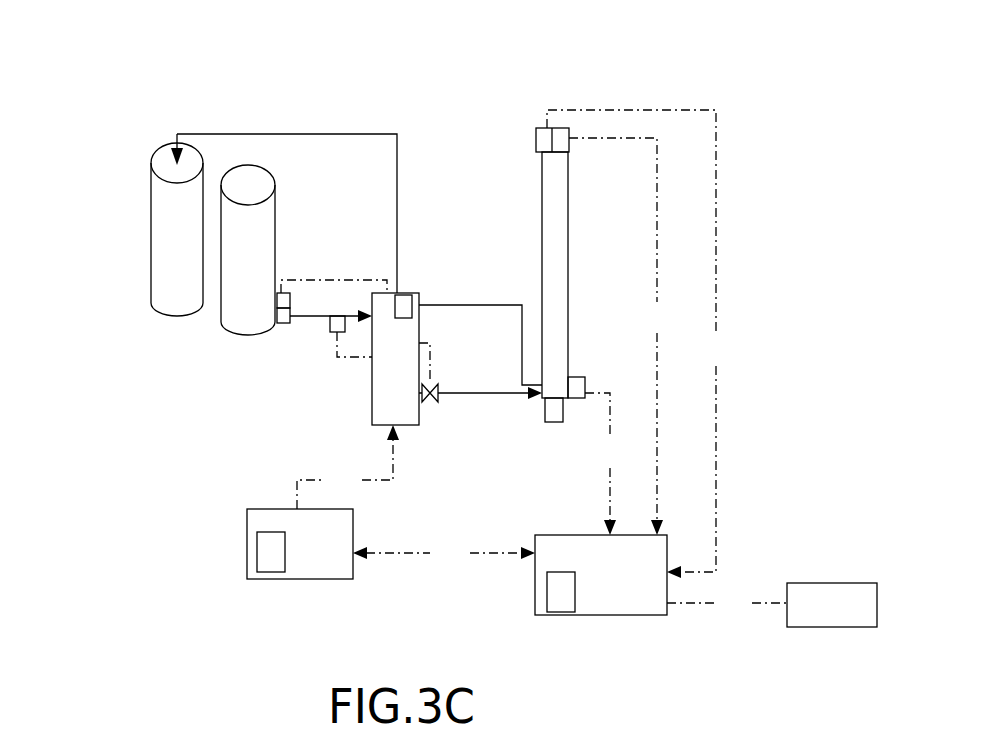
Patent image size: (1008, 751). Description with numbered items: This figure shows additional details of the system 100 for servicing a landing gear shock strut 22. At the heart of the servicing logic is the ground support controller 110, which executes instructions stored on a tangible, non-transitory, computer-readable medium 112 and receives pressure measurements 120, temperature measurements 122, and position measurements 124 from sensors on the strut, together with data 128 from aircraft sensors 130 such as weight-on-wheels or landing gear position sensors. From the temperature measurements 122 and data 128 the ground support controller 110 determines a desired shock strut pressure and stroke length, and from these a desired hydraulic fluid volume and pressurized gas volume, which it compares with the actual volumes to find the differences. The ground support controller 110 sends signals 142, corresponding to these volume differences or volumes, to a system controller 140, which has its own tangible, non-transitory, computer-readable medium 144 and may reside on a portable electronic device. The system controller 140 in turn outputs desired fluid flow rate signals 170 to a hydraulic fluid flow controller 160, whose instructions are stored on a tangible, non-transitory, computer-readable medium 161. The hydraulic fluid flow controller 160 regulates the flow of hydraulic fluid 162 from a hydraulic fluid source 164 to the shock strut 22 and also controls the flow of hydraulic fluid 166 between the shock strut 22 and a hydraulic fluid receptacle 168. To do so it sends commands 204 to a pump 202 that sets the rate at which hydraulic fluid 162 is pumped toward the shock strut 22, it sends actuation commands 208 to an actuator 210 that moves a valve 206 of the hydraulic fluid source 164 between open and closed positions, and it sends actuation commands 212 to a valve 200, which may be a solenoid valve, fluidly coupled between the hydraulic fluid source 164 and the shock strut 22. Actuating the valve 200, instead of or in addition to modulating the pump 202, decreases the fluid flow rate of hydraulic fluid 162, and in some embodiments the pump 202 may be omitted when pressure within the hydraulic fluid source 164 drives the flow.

The system 100 is at (135, 90).
The shock strut 22 is at (532, 238).
The ground support controller 110 is at (622, 587).
The tangible, non-transitory, computer-readable medium 112 is at (557, 593).
The pressure measurements 120 is at (622, 336).
The temperature measurements 122 is at (643, 344).
The position measurements 124 is at (607, 464).
The data 128 is at (727, 603).
The aircraft sensors 130 is at (845, 619).
The system controller 140 is at (324, 556).
The signals 142 is at (444, 553).
The tangible, non-transitory, computer-readable medium 144 is at (262, 552).
The hydraulic fluid flow controller 160 is at (412, 372).
The tangible, non-transitory, computer-readable medium 161 is at (403, 306).
The hydraulic fluid 162 is at (304, 318).
The hydraulic fluid source 164 is at (265, 272).
The hydraulic fluid 166 is at (398, 190).
The hydraulic fluid receptacle 168 is at (194, 249).
The desired fluid flow rate signals 170 is at (348, 467).
The valve 200 is at (437, 401).
The pump 202 is at (336, 333).
The commands 204 is at (341, 358).
The valve 206 is at (284, 324).
The actuation commands 208 is at (329, 280).
The actuator 210 is at (279, 293).
The actuation commands 212 is at (433, 357).